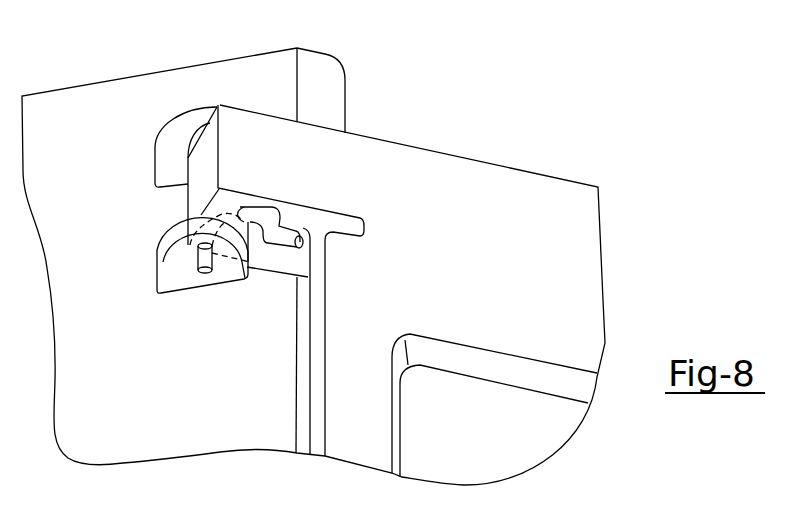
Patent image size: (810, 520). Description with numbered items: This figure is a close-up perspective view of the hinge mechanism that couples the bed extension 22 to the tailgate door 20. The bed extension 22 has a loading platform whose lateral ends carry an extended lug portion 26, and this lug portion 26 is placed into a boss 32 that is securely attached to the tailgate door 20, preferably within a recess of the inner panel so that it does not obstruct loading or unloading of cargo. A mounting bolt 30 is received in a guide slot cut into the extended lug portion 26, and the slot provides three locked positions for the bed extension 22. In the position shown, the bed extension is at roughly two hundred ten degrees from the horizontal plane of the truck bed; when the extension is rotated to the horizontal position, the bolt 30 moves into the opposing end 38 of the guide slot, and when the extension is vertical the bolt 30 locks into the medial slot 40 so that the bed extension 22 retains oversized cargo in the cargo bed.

The tailgate door 20 is at (88, 84).
The bed extension 22 is at (527, 172).
The extended lug portion 26 is at (252, 110).
The mounting bolt 30 is at (205, 274).
The boss 32 is at (195, 112).
The opposing end of guide slot 38 is at (297, 237).
The medial slot 40 is at (264, 248).